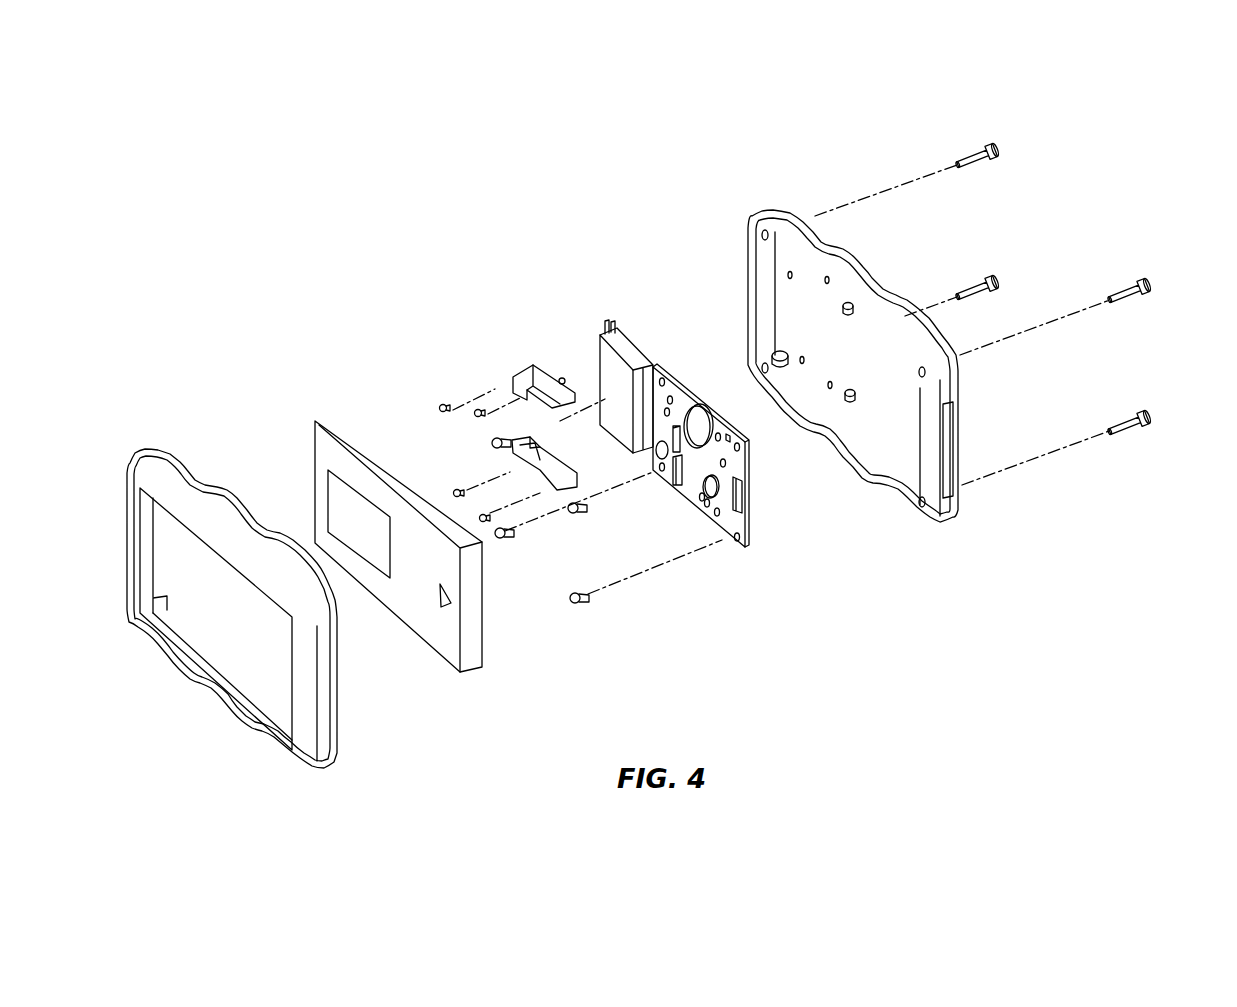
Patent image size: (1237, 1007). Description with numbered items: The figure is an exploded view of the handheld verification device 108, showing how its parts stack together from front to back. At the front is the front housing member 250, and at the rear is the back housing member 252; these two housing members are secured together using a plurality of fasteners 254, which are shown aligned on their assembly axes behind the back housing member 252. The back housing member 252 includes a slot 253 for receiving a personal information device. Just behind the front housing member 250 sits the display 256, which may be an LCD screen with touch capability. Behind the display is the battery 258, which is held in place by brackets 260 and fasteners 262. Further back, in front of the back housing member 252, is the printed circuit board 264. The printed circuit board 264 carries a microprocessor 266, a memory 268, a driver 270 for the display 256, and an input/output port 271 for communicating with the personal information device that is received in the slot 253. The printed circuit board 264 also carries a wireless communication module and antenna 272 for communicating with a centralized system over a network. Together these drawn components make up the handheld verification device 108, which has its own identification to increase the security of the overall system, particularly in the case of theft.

The handheld verification device 108 is at (270, 166).
The front housing member 250 is at (160, 445).
The back housing member 252 is at (943, 527).
The slot 253 is at (947, 430).
The fasteners 254 is at (1000, 145).
The display 256 is at (330, 415).
The battery 258 is at (603, 337).
The brackets 260 is at (530, 365).
The fasteners 262 is at (442, 407).
The printed circuit board 264 is at (747, 522).
The microprocessor 266 is at (676, 426).
The memory 268 is at (670, 483).
The driver 270 is at (700, 415).
The input/output port 271 is at (732, 512).
The wireless communication module and antenna 272 is at (726, 482).